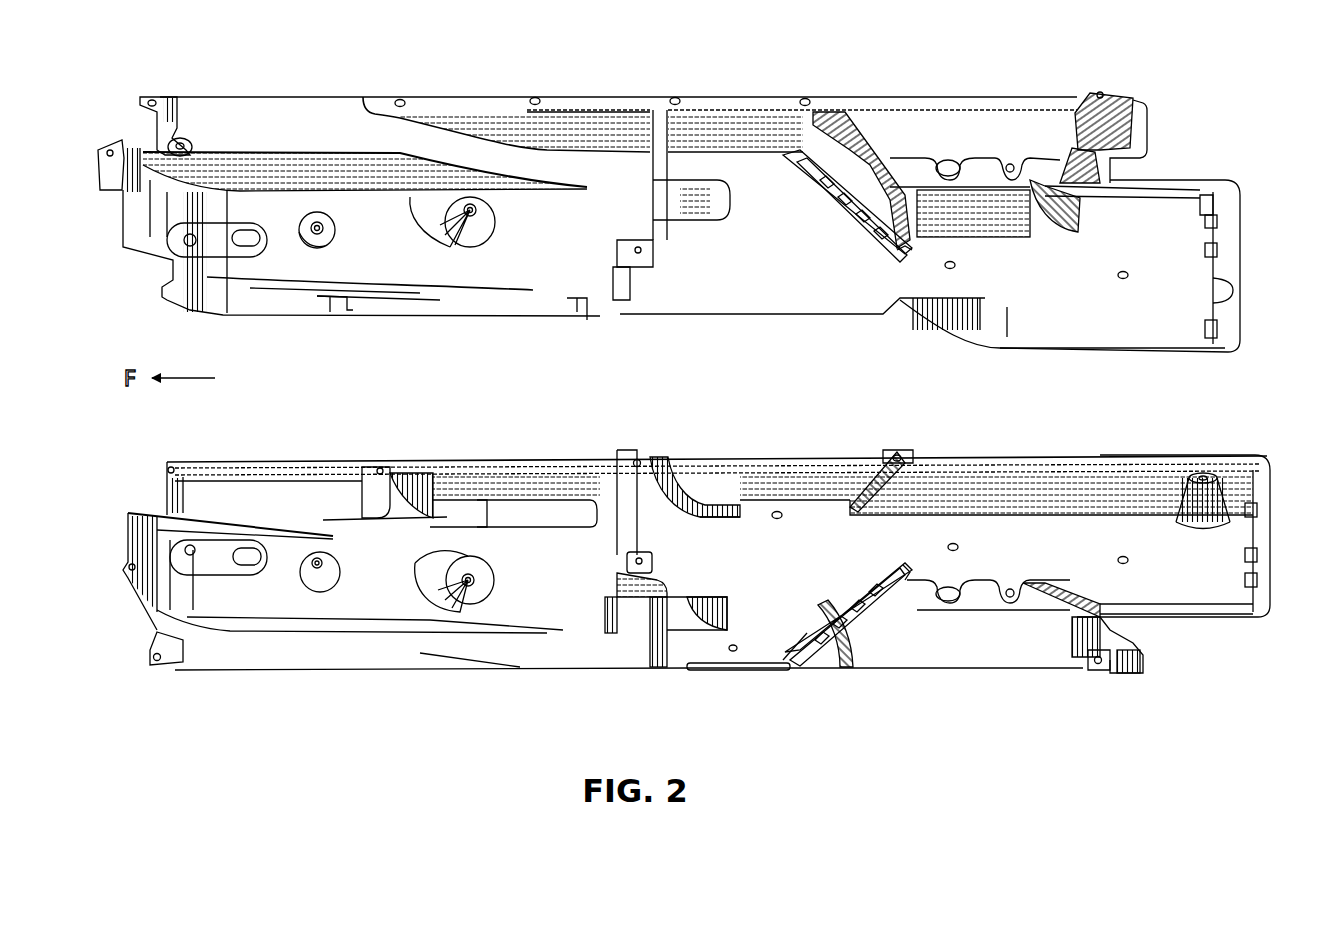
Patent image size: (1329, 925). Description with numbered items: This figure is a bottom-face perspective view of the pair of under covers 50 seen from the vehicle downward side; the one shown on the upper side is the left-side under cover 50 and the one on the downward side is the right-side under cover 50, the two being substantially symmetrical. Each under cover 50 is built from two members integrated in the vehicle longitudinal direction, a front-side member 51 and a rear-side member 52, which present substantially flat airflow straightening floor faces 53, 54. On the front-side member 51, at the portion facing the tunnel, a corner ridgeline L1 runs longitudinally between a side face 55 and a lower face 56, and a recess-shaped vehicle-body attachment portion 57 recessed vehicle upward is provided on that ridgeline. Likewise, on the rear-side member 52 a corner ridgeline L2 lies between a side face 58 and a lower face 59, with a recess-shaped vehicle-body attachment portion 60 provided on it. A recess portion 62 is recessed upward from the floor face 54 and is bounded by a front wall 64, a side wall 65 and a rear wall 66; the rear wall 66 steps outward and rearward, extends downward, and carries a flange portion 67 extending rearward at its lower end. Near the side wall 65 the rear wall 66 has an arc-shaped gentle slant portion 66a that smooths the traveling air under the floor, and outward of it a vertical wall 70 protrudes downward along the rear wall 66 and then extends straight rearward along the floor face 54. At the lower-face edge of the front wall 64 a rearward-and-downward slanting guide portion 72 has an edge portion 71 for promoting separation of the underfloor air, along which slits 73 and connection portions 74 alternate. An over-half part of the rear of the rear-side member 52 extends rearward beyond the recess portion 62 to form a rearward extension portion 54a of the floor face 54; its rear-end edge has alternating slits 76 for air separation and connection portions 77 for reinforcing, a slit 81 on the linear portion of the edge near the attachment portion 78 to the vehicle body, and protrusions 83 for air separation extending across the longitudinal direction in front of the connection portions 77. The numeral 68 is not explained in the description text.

The under cover 50 is at (608, 95).
The front-side member 51 is at (537, 320).
The rear-side member 52 is at (803, 314).
The floor face 53 is at (534, 237).
The floor face 54 is at (761, 261).
The rearward extension portion 54a is at (1165, 352).
The side face 55 is at (443, 475).
The lower face 56 is at (503, 312).
The vehicle-body attachment portion 57 is at (386, 462).
The side face 58 is at (722, 480).
The lower face 59 is at (745, 312).
The vehicle-body attachment portion 60 is at (640, 450).
The recess portion 62 is at (968, 105).
The front wall 64 is at (855, 150).
The side wall 65 is at (1012, 222).
The rear wall 66 is at (1062, 152).
The gentle slant portion 66a is at (1065, 224).
The flange portion 67 is at (1149, 128).
The mounting hole 68 is at (1101, 93).
The vertical wall 70 is at (1130, 207).
The edge portion 71 is at (850, 212).
The guide portion 72 is at (797, 165).
The slits 73 is at (880, 246).
The connection portions 74 is at (862, 236).
The slits 76 is at (1220, 233).
The connection portions 77 is at (1225, 252).
The attachment portion 78 is at (1235, 288).
The slit 81 is at (1204, 197).
The protrusions 83 is at (1204, 335).
The corner ridgeline L1 is at (440, 312).
The corner ridgeline L2 is at (690, 316).